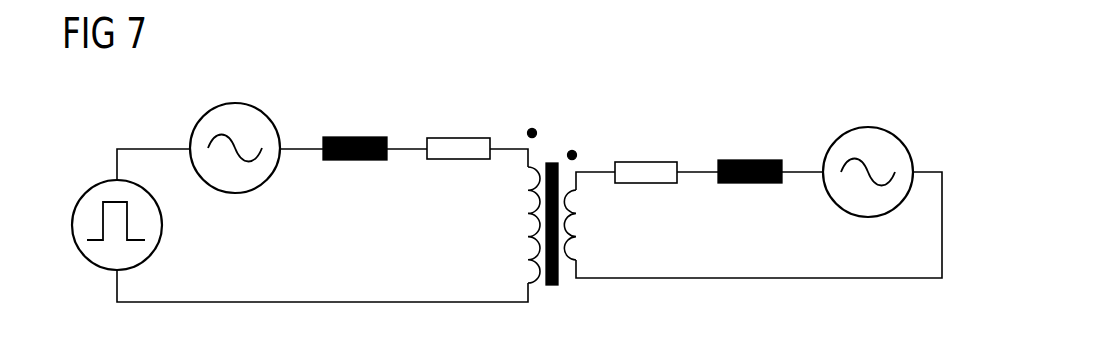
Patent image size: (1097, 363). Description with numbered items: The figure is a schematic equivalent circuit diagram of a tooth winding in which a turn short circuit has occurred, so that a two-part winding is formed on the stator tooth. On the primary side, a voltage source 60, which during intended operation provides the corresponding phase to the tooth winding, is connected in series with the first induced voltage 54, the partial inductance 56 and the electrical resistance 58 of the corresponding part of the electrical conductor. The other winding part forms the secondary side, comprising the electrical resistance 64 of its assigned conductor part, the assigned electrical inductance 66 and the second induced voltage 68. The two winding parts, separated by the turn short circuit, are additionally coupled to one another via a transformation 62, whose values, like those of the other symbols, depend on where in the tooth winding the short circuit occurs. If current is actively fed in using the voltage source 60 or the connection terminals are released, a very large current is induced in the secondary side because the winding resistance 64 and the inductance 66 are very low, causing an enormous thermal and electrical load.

The induced voltage u_emk,1 54 is at (235, 103).
The partial inductance L'_m 56 is at (355, 137).
The electrical resistance 58 is at (458, 138).
The voltage source 60 is at (101, 181).
The transformation 62 is at (554, 128).
The electrical resistance 64 is at (646, 162).
The electrical inductance L''_m 66 is at (750, 160).
The induced voltage u'_emk,2 68 is at (868, 127).